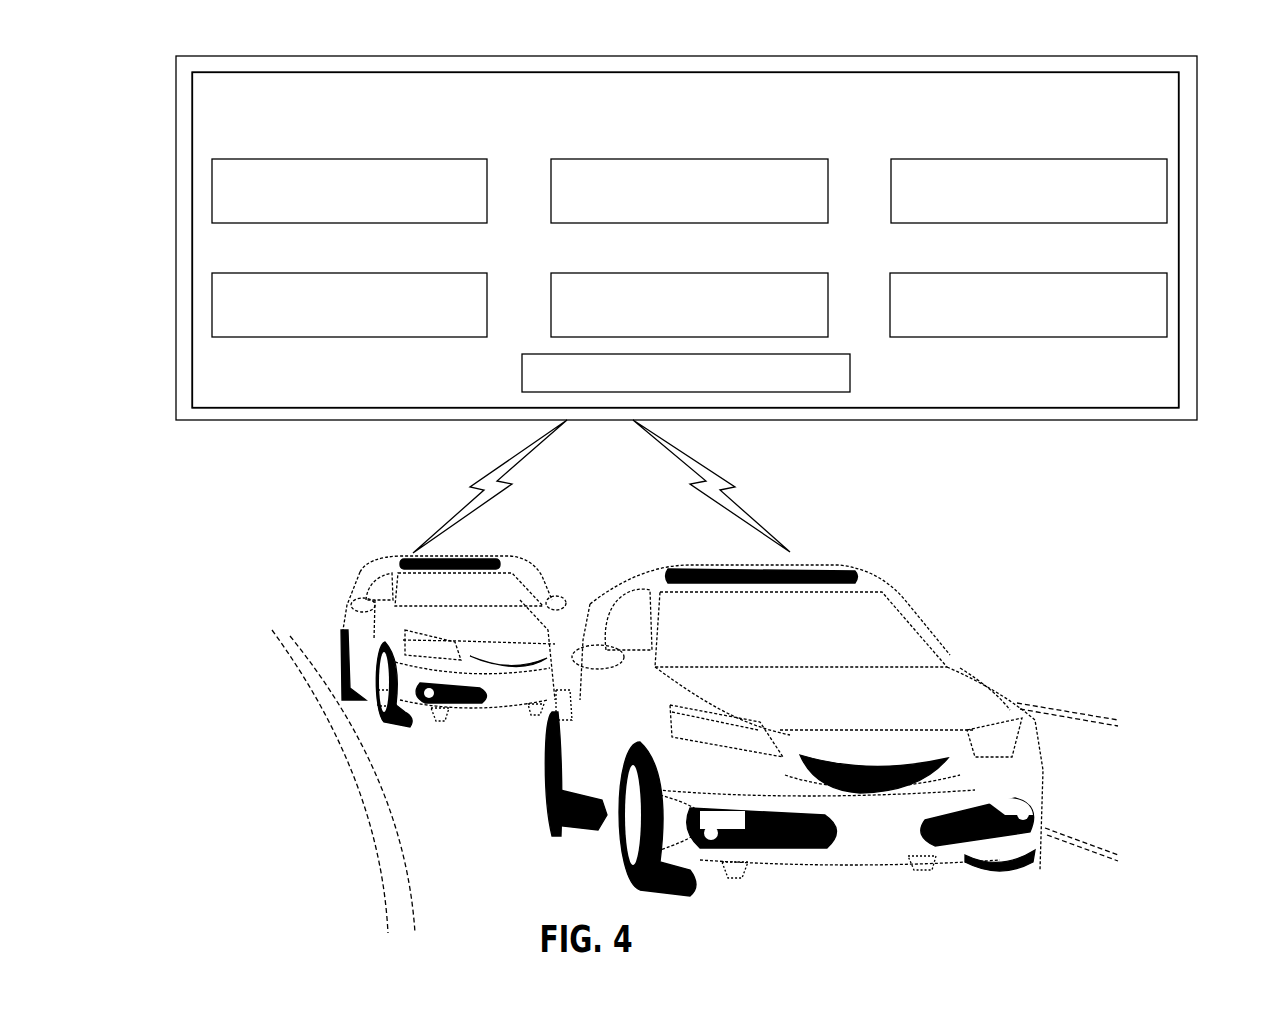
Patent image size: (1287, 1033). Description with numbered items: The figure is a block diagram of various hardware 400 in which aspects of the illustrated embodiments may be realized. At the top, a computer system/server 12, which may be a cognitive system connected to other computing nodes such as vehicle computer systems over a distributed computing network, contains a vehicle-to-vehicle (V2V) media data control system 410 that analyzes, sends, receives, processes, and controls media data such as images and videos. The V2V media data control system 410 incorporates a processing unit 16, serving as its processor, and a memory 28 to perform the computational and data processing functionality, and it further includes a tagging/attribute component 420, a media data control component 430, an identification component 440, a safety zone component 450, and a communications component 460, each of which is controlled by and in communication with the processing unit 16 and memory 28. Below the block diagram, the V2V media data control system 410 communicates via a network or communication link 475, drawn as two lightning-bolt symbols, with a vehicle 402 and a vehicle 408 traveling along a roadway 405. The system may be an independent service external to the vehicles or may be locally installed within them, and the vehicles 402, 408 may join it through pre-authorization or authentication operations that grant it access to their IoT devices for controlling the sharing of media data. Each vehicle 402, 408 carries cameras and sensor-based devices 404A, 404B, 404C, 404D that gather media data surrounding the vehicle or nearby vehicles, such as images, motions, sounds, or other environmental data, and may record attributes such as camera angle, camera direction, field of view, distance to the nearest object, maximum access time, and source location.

The hardware 400 is at (128, 70).
The computer system/server 12 is at (1199, 186).
The V2V media data control system 410 is at (1180, 242).
The processing unit 16 is at (365, 158).
The memory 28 is at (680, 158).
The tagging/attribute component 420 is at (1028, 158).
The media data control component 430 is at (364, 272).
The identification component 440 is at (682, 272).
The safety zone component 450 is at (1028, 272).
The communications component 460 is at (851, 370).
The network or communication link 475 is at (478, 486).
The vehicle 402 is at (670, 567).
The vehicle 408 is at (397, 557).
The device 404A is at (346, 632).
The device 404B is at (372, 690).
The device 404C is at (440, 722).
The device 404D is at (536, 710).
The roadway 405 is at (388, 838).